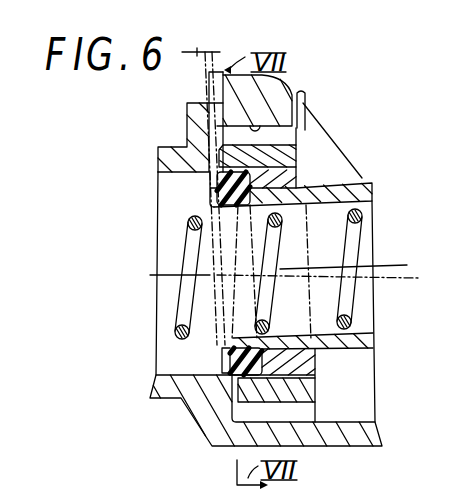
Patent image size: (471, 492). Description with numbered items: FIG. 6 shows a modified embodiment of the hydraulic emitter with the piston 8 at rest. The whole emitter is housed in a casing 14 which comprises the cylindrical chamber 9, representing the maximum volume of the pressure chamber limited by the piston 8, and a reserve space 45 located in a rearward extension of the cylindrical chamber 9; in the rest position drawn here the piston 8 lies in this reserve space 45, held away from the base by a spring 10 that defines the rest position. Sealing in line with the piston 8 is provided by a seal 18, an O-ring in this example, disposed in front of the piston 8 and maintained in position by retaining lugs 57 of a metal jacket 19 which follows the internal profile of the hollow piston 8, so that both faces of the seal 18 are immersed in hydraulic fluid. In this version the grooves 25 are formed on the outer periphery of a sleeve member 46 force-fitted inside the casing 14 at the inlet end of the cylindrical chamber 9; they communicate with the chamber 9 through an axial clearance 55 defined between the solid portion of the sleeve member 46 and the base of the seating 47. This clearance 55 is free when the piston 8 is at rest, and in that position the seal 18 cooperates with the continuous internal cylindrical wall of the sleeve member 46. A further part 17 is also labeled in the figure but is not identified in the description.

The axial clearance 55 is at (183, 51).
The casing 14 is at (182, 104).
The cylindrical chamber 9 is at (170, 365).
The seating 47 is at (272, 125).
The grooves 25 is at (302, 95).
The sleeve member 46 is at (303, 132).
The sealing ring 17 is at (278, 182).
The seal 18 is at (207, 176).
The piston 8 is at (364, 177).
The spring 10 is at (347, 288).
The metal jacket 19 is at (365, 333).
The retaining lugs 57 is at (222, 358).
The reserve space 45 is at (362, 393).